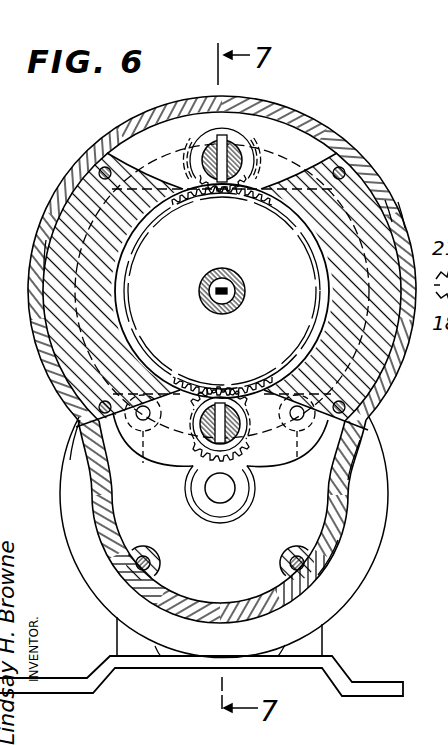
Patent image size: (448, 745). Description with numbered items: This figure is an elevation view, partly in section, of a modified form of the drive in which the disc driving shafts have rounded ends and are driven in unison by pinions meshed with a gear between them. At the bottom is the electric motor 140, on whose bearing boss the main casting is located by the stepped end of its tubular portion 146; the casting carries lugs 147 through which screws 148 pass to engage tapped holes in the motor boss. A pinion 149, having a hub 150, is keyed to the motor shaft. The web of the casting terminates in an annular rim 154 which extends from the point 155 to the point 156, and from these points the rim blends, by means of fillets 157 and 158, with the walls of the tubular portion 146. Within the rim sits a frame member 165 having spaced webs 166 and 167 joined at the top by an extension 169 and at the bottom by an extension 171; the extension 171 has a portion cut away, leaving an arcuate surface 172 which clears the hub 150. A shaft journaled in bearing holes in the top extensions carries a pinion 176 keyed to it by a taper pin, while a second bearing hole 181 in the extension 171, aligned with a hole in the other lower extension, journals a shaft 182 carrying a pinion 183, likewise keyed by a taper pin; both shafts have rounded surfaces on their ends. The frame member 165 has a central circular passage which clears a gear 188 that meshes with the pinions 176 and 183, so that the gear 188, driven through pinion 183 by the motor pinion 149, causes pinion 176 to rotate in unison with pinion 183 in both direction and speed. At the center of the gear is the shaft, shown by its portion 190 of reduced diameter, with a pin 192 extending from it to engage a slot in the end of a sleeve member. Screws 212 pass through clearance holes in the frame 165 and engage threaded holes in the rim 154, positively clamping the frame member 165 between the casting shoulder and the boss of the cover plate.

The electric motor 140 is at (331, 610).
The tubular portion 146 is at (348, 524).
The lugs 147 is at (139, 448).
The screws 148 is at (308, 563).
The pinion 149 is at (214, 513).
The hub 150 is at (216, 488).
The annular rim 154 is at (302, 113).
The point 155 is at (374, 423).
The point 156 is at (70, 423).
The fillet 157 is at (357, 451).
The fillet 158 is at (79, 440).
The frame member 165 is at (387, 207).
The web 166 is at (401, 215).
The web 167 is at (50, 257).
The extension 169 is at (314, 147).
The extension 171 is at (281, 470).
The arcuate surface 172 is at (258, 489).
The pinion 176 is at (243, 163).
The bearing hole 181 is at (314, 250).
The shaft 182 is at (208, 427).
The pinion 183 is at (247, 438).
The gear 188 is at (306, 310).
The portion of reduced diameter 190 is at (239, 284).
The pin 192 is at (212, 305).
The screws 212 is at (100, 172).